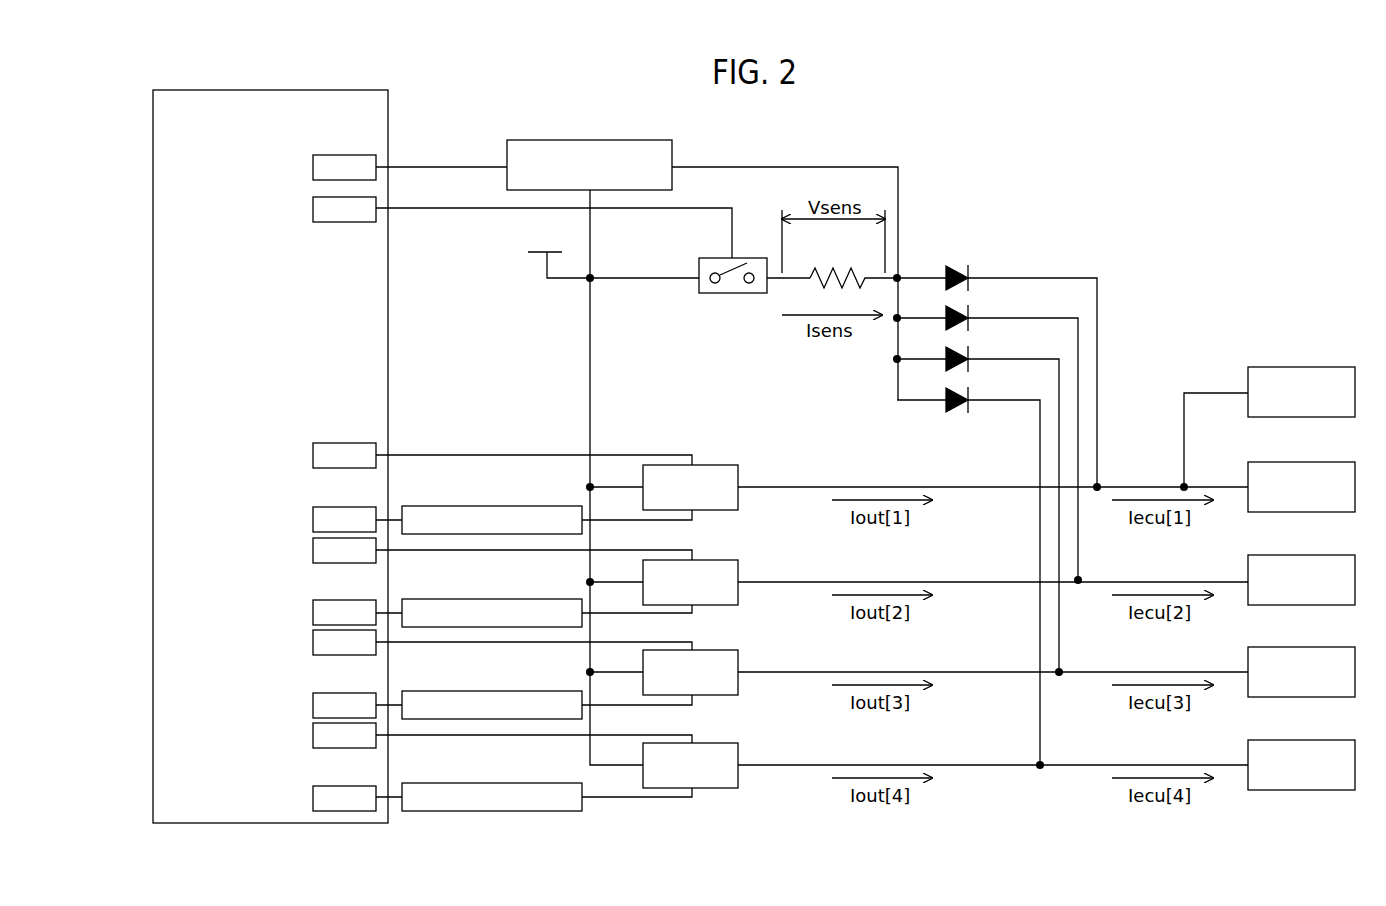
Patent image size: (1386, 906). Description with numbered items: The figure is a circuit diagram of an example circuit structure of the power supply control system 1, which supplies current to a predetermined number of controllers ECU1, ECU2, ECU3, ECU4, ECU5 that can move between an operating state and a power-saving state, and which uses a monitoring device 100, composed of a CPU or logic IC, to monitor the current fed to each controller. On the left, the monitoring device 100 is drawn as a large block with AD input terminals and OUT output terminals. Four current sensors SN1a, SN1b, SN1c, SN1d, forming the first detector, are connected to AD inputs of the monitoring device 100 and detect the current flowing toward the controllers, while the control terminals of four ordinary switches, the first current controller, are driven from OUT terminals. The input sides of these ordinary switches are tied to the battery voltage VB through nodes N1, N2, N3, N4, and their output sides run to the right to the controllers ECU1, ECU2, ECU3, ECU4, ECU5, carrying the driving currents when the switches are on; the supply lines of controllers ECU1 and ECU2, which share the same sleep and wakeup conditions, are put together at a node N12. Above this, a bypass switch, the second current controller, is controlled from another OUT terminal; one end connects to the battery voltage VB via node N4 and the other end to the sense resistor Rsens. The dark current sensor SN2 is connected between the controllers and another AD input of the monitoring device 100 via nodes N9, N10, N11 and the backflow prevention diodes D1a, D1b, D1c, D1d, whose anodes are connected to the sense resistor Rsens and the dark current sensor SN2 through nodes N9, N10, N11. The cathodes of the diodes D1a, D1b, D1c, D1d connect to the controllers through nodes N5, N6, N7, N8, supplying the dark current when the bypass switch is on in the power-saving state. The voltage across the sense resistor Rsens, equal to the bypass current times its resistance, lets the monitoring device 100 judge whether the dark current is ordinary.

The power supply control system 1 is at (904, 101).
The monitoring device 100 is at (273, 88).
The dark current sensor SN2 is at (595, 138).
The battery voltage VB is at (598, 254).
The sense resistor Rsens is at (851, 267).
The node N1 is at (592, 485).
The node N2 is at (592, 580).
The node N3 is at (592, 670).
The node N4 is at (592, 277).
The node N5 is at (1099, 485).
The node N6 is at (1080, 578).
The node N7 is at (1061, 670).
The node N8 is at (1042, 762).
The node N9 is at (899, 276).
The node N10 is at (896, 320).
The node N11 is at (896, 361).
The node N12 is at (1186, 485).
The backflow prevention diode D1a is at (997, 376).
The backflow prevention diode D1b is at (987, 442).
The backflow prevention diode D1c is at (978, 509).
The backflow prevention diode D1d is at (968, 576).
The current sensor SN1a is at (535, 505).
The current sensor SN1b is at (535, 598).
The current sensor SN1c is at (535, 690).
The current sensor SN1d is at (535, 782).
The controller ECU1 is at (1301, 392).
The controller ECU2 is at (1301, 487).
The controller ECU3 is at (1301, 580).
The controller ECU4 is at (1301, 672).
The controller ECU5 is at (1301, 765).